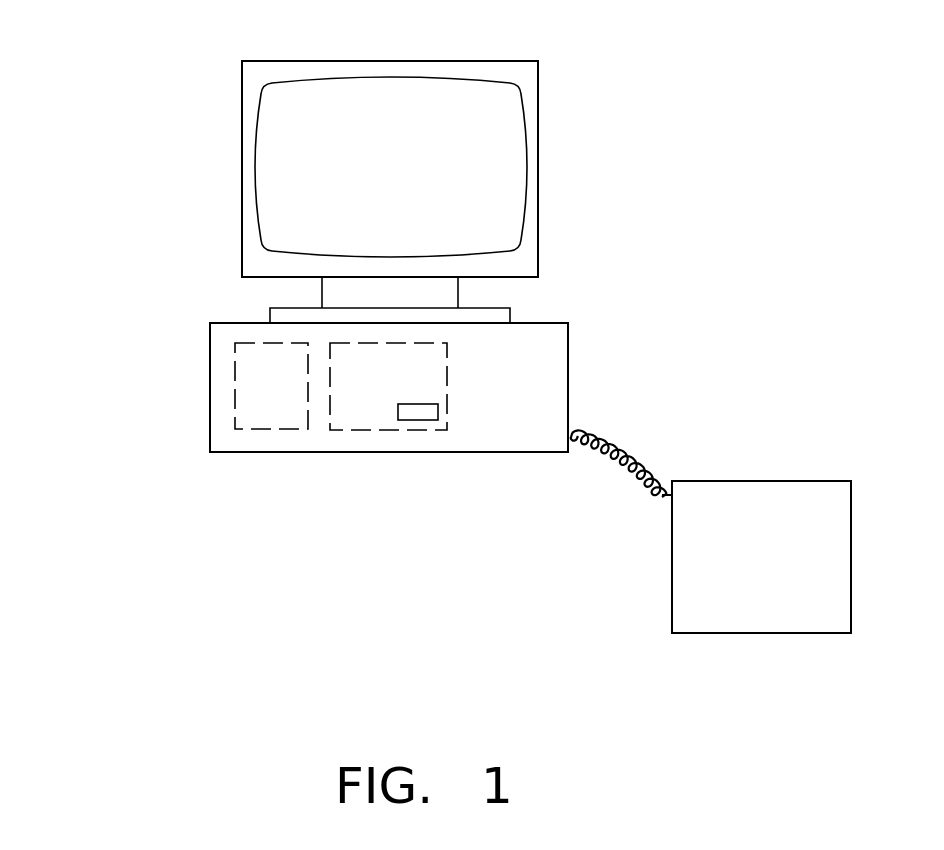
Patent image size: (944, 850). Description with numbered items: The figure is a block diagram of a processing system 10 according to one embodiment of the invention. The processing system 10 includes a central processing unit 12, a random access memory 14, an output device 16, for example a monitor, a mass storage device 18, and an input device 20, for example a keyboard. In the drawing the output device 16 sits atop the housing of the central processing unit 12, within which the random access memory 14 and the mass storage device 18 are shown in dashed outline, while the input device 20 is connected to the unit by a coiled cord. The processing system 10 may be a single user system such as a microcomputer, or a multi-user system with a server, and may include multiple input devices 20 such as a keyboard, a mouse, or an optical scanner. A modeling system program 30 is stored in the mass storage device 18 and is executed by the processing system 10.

The processing system 10 is at (142, 90).
The central processing unit 12 is at (530, 378).
The random access memory 14 is at (272, 393).
The output device 16 is at (405, 178).
The mass storage device 18 is at (362, 408).
The input device 20 is at (787, 571).
The modeling system program 30 is at (415, 414).